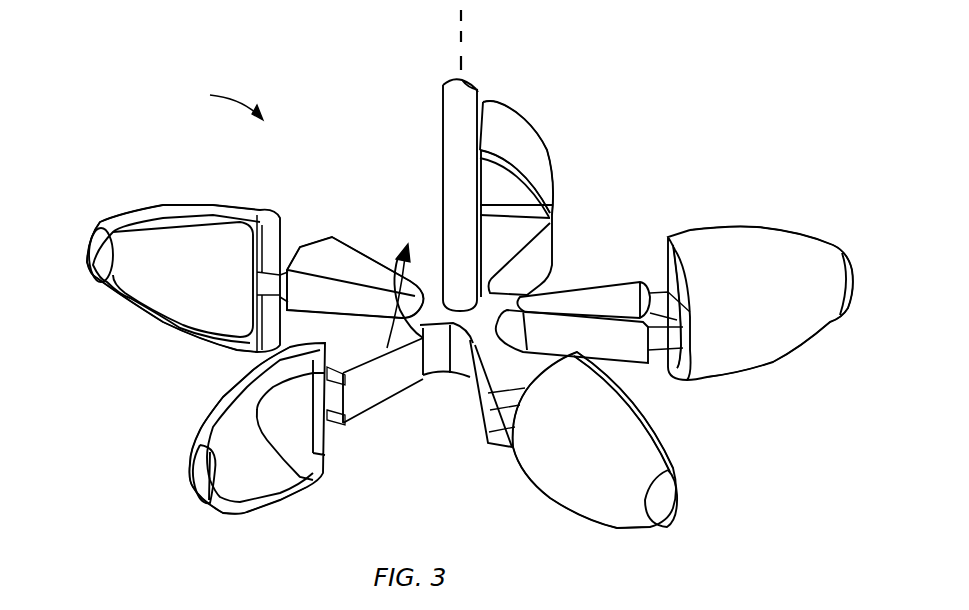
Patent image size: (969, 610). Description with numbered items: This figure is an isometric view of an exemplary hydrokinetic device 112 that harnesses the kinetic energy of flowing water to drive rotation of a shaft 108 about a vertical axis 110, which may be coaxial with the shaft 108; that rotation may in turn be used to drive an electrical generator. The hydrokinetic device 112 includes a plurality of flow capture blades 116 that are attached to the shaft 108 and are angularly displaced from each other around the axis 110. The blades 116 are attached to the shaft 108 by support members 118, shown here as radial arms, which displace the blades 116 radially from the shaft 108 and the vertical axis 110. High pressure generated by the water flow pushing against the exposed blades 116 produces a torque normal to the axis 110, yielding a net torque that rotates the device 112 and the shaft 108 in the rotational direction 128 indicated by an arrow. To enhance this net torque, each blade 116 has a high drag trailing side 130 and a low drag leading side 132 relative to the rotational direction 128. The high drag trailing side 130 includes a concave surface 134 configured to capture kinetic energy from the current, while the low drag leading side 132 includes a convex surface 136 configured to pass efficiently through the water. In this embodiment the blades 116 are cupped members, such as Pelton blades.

The shaft 108 is at (455, 125).
The vertical axis 110 is at (463, 38).
The hydrokinetic device 112 is at (285, 211).
The flow capture blade 116 is at (502, 100).
The support member 118 is at (338, 253).
The rotational direction 128 is at (395, 306).
The high drag trailing side 130 is at (135, 275).
The low drag leading side 132 is at (518, 133).
The concave surface 134 is at (182, 282).
The convex surface 136 is at (540, 163).